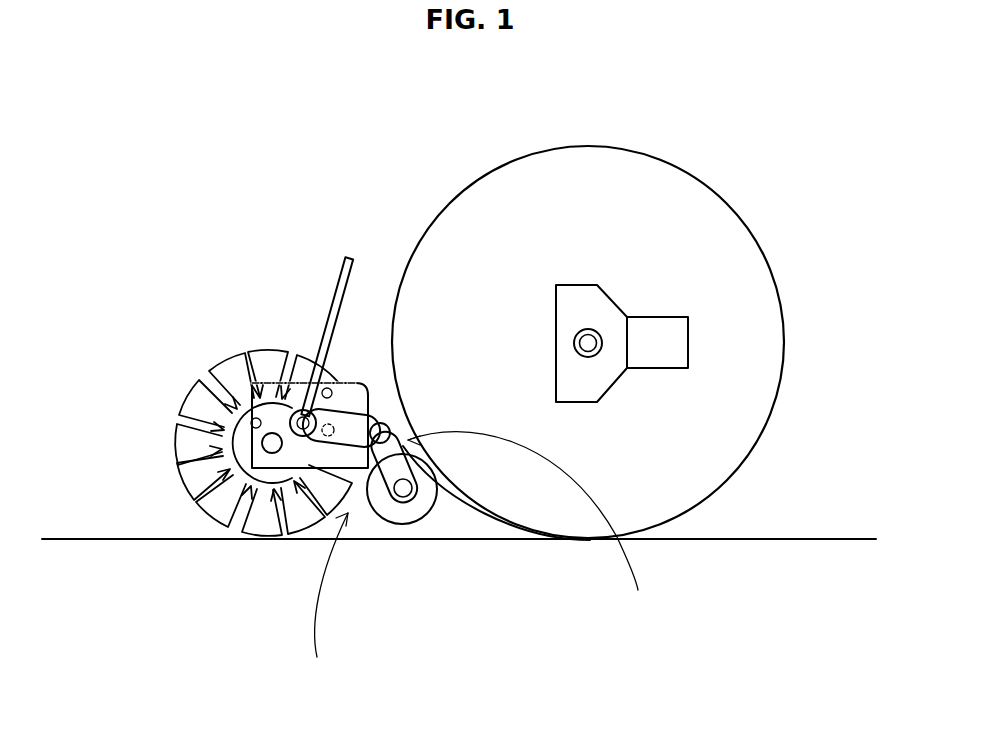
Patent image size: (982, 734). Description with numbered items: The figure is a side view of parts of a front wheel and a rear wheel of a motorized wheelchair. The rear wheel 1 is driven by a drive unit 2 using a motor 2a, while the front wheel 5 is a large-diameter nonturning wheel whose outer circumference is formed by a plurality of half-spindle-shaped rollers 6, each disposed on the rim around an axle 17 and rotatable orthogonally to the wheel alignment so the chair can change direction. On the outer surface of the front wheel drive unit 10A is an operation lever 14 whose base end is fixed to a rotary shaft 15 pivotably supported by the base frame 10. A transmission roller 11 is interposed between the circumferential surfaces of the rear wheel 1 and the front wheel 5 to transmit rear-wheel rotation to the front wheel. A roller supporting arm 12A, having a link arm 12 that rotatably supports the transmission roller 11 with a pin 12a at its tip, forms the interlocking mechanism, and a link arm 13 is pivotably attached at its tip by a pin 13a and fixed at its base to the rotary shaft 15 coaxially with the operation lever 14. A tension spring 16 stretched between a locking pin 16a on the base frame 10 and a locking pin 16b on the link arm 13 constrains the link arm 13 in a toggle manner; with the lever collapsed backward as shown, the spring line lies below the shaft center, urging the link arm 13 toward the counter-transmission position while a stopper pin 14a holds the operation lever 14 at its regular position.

The rear wheel 1 is at (776, 273).
The drive unit 2 is at (587, 285).
The motor 2a is at (657, 317).
The front wheel 5 is at (212, 443).
The roller 6 is at (187, 403).
The base frame 10 is at (222, 458).
The front wheel drive unit 10A is at (313, 602).
The transmission roller 11 is at (420, 506).
The link arm 12 is at (390, 465).
The pin 12a is at (405, 492).
The roller supporting arm 12A is at (533, 527).
The link arm 13 is at (372, 410).
The pin 13a is at (392, 436).
The operation lever 14 is at (338, 300).
The stopper pin 14a is at (330, 390).
The rotary shaft 15 is at (303, 410).
The tension spring 16 is at (262, 356).
The locking pin 16a is at (199, 412).
The locking pin 16b is at (332, 470).
The axle 17 is at (270, 452).